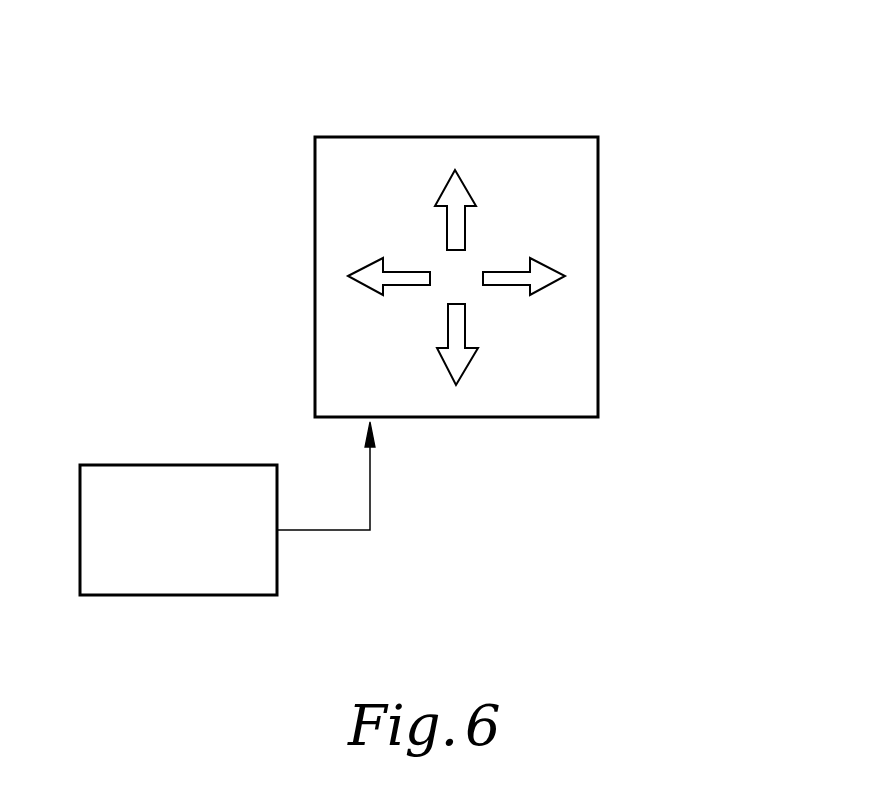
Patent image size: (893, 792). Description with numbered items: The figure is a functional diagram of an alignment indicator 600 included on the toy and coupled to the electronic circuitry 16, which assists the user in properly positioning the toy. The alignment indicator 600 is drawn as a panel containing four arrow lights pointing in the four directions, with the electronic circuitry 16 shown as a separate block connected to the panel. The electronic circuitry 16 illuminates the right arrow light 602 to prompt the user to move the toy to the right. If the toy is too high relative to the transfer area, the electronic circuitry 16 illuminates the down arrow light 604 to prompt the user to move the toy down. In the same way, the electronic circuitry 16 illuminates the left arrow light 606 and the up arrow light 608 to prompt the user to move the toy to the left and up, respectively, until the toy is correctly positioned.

The alignment indicator 600 is at (511, 253).
The right arrow light 602 is at (545, 290).
The down arrow light 604 is at (465, 373).
The left arrow light 606 is at (367, 290).
The up arrow light 608 is at (443, 185).
The electronic circuitry 16 is at (118, 465).